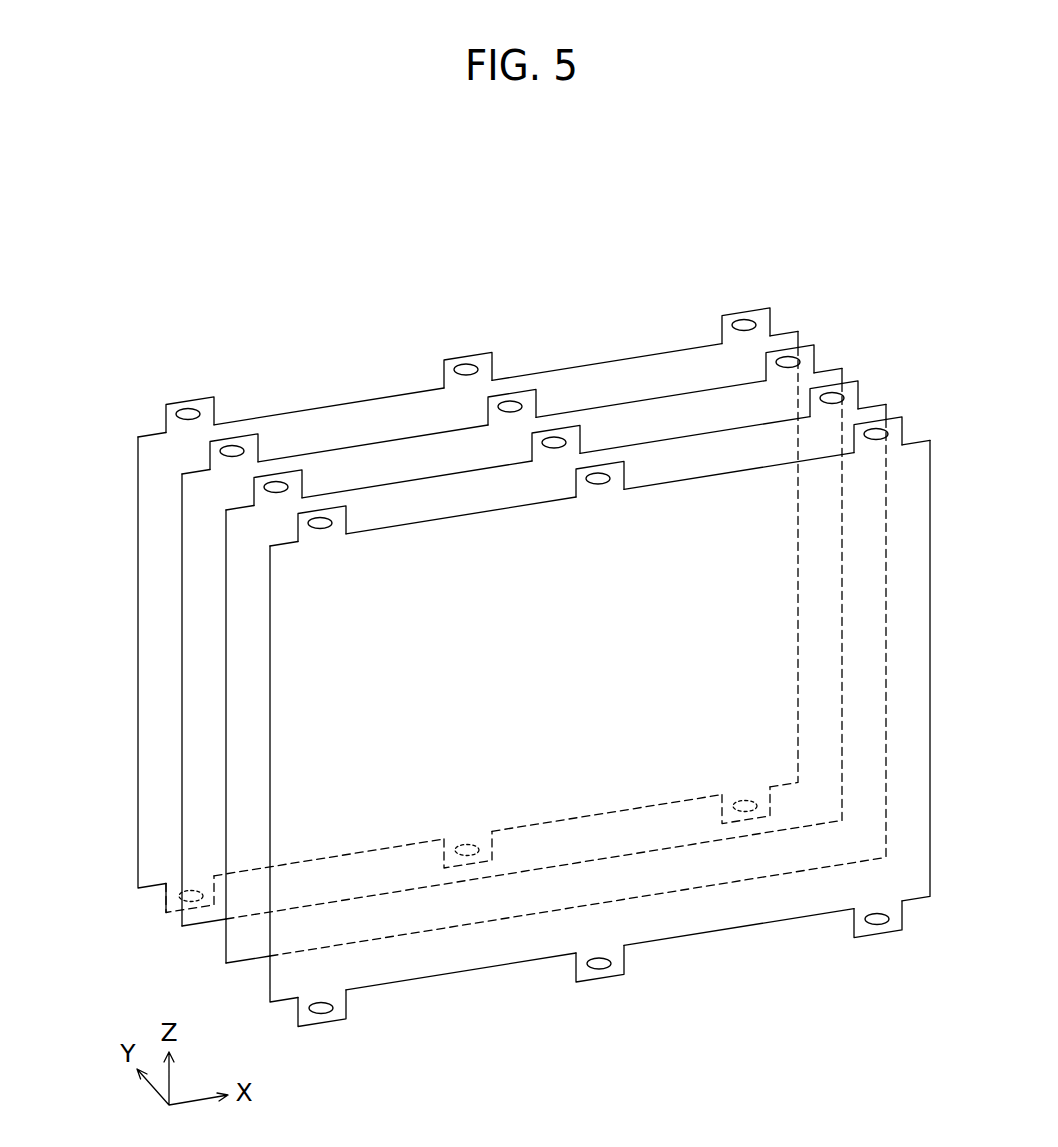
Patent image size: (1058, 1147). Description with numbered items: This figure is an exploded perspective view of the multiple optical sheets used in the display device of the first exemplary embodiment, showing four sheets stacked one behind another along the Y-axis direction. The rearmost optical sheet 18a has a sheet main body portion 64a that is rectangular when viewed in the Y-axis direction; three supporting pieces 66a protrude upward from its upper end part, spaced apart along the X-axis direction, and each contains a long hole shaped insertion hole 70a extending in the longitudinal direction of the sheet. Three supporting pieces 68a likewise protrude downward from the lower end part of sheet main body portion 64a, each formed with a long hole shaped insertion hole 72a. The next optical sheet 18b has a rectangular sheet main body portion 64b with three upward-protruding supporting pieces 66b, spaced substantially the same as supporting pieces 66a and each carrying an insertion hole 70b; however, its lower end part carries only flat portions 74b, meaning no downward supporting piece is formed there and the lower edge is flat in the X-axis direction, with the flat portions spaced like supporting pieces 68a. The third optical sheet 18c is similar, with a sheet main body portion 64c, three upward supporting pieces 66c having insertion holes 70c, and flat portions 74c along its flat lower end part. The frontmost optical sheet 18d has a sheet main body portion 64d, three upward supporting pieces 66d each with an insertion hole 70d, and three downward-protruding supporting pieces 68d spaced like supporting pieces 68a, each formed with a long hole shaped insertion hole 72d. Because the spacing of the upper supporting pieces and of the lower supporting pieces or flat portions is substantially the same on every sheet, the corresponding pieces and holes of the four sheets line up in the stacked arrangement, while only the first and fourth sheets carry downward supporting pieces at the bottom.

The optical sheet 18a is at (151, 623).
The optical sheet 18b is at (200, 641).
The optical sheet 18c is at (243, 668).
The optical sheet 18d is at (300, 697).
The sheet main body portion 64a is at (327, 423).
The sheet main body portion 64b is at (350, 460).
The sheet main body portion 64c is at (373, 505).
The sheet main body portion 64d is at (397, 550).
The supporting pieces 66a is at (190, 405).
The supporting pieces 66b is at (250, 438).
The supporting pieces 66c is at (290, 478).
The supporting pieces 66d is at (338, 515).
The insertion hole 70a is at (187, 410).
The insertion hole 70b is at (232, 452).
The insertion hole 70c is at (276, 490).
The insertion hole 70d is at (318, 528).
The supporting pieces 68a is at (166, 900).
The supporting pieces 68d is at (298, 1013).
The insertion hole 72a is at (181, 898).
The insertion hole 72d is at (321, 1016).
The flat portions 74b is at (218, 922).
The flat portions 74c is at (260, 962).